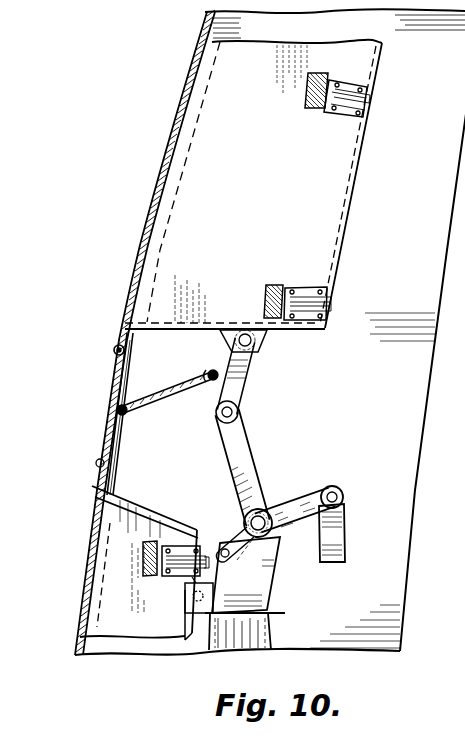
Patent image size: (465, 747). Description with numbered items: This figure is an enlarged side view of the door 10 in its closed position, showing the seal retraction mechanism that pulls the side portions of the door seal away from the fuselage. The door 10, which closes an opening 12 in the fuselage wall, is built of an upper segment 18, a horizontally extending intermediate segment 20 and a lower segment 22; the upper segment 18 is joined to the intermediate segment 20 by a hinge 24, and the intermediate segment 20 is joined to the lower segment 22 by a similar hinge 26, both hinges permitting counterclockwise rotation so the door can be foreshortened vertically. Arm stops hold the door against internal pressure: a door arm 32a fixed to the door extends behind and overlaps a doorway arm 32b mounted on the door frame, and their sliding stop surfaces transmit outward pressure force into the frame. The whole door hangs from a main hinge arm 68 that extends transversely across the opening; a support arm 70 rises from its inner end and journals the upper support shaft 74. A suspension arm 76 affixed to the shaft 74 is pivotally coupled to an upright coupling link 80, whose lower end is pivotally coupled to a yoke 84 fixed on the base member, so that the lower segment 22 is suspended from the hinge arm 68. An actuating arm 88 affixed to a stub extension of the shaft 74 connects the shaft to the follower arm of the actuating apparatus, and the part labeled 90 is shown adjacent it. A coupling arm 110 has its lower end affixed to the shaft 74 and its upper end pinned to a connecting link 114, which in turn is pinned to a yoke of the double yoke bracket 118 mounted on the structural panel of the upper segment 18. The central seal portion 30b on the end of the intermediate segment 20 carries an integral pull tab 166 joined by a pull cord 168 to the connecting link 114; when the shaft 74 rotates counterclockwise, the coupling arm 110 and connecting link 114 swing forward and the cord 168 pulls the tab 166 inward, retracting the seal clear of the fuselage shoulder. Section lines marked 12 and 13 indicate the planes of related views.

The door 10 is at (132, 198).
The opening 12 is at (208, 22).
The section line 13 is at (70, 403).
The upper segment 18 is at (138, 245).
The intermediate segment 20 is at (100, 438).
The lower segment 22 is at (78, 603).
The hinge 24 is at (97, 463).
The hinge 26 is at (118, 348).
The central portion of the seal 30b is at (122, 457).
The door arm 32a is at (366, 92).
The doorway arm 32b is at (307, 98).
The main hinge arm 68 is at (258, 652).
The support arm 70 is at (262, 587).
The upper support shaft 74 is at (280, 542).
The suspension arm 76 is at (228, 553).
The coupling link 80 is at (192, 577).
The yoke 84 is at (202, 608).
The actuating arm 88 is at (318, 485).
The counterweight 90 is at (342, 530).
The coupling arm 110 is at (245, 448).
The connecting link 114 is at (250, 373).
The double yoke bracket 118 is at (267, 335).
The pull tab 166 is at (125, 387).
The pull cord 168 is at (172, 387).